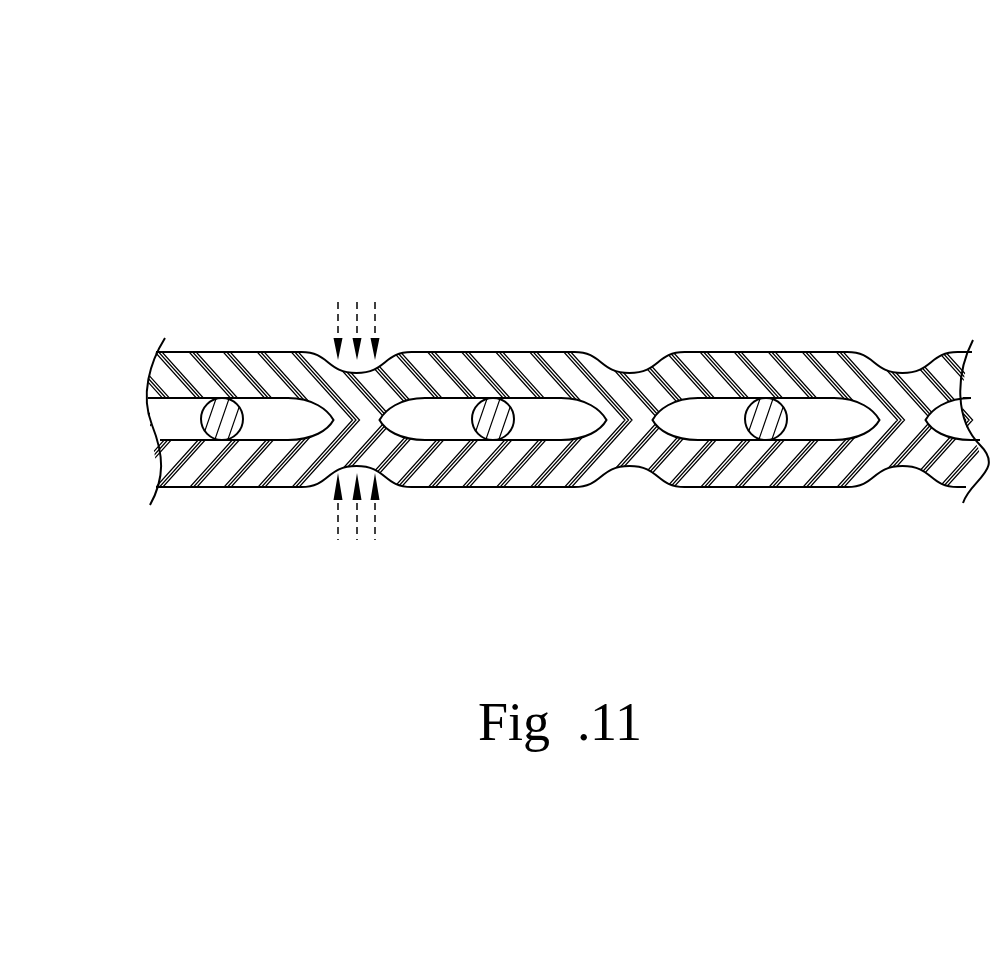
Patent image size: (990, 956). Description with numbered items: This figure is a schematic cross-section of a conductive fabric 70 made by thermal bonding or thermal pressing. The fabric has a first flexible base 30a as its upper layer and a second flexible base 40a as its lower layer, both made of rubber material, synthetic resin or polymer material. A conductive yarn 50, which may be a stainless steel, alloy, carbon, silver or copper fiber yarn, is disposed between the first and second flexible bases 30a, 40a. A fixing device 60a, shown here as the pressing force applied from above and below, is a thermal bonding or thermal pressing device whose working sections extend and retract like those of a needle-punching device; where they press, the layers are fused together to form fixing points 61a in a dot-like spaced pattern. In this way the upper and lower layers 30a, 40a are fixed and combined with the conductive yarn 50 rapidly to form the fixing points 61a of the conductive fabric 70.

The conductive fabric 70 is at (647, 222).
The first flexible base 30a is at (448, 368).
The second flexible base 40a is at (528, 477).
The fixing points 61a is at (300, 412).
The conductive yarn 50 is at (503, 410).
The fixing device 60a is at (350, 283).